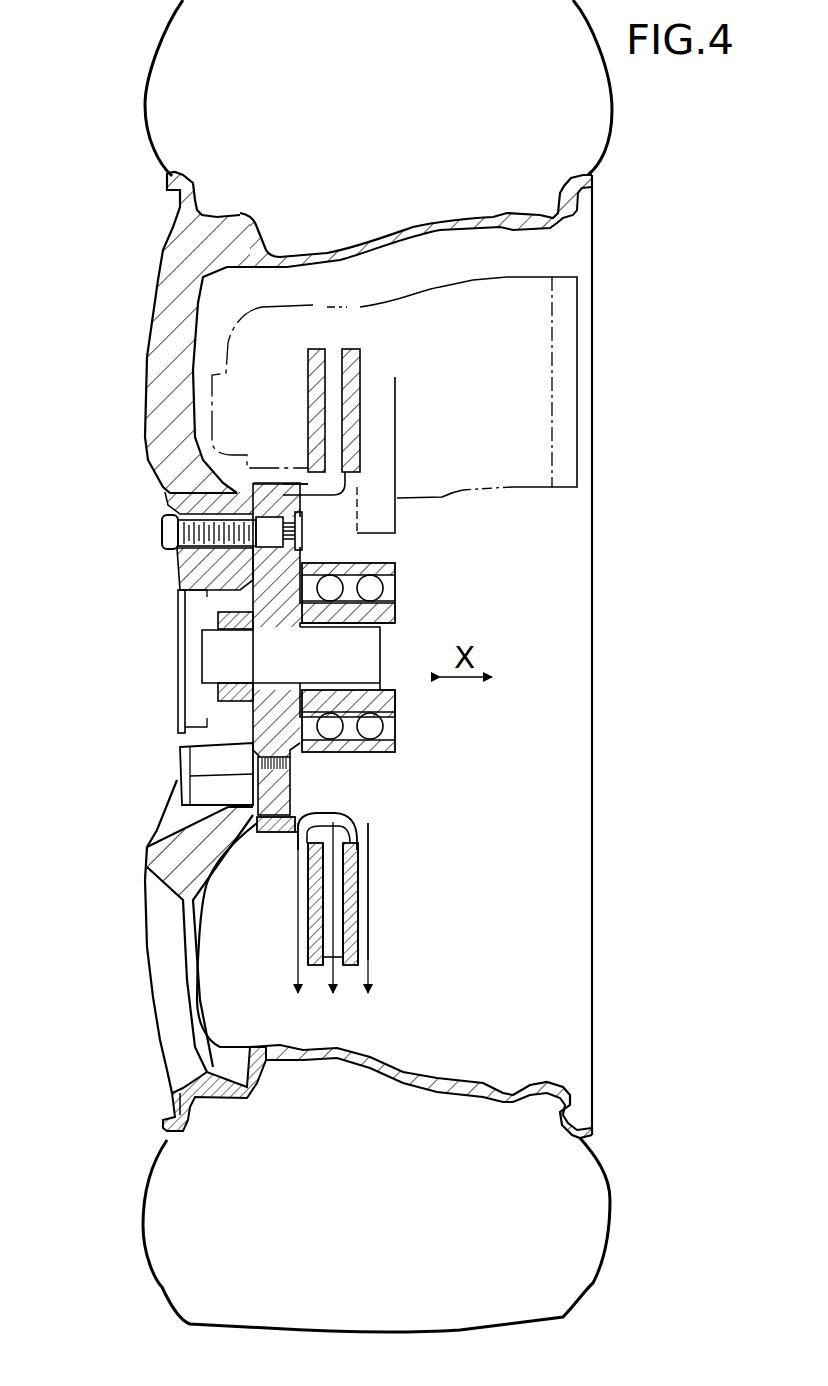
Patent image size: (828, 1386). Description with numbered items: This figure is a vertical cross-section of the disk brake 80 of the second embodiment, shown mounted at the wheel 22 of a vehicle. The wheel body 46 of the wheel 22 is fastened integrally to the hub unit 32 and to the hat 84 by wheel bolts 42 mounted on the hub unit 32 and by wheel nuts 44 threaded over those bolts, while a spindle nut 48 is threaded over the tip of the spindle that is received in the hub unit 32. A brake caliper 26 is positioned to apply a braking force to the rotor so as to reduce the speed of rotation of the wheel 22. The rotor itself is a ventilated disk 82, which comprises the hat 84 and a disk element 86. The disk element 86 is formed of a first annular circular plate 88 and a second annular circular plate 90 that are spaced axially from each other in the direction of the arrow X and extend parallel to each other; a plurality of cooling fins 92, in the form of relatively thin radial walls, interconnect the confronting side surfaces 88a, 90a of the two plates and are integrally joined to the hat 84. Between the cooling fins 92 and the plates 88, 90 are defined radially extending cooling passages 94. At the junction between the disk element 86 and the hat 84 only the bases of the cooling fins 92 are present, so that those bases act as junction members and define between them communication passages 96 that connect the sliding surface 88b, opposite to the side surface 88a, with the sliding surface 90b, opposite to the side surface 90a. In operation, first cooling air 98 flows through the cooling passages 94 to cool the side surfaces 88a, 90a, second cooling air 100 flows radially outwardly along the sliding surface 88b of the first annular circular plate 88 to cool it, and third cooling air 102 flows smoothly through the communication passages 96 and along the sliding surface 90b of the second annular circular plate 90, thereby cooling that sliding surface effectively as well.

The wheel 22 is at (148, 1173).
The brake caliper 26 is at (510, 478).
The hub unit 32 is at (377, 618).
The wheel bolts 42 is at (223, 560).
The wheel nuts 44 is at (162, 532).
The wheel body 46 is at (160, 322).
The spindle nut 48 is at (220, 617).
The disk brake 80 is at (104, 44).
The ventilated disk 82 is at (343, 901).
The hat 84 is at (180, 777).
The disk element 86 is at (367, 381).
The first annular circular plate 88 is at (352, 940).
The side surface 88a is at (345, 858).
The sliding surface 88b is at (359, 874).
The second annular circular plate 90 is at (313, 950).
The side surface 90a is at (327, 913).
The sliding surface 90b is at (310, 883).
The cooling fins 92 is at (355, 478).
The cooling passages 94 is at (343, 962).
The communication passages 96 is at (357, 825).
The first cooling air 98 is at (355, 818).
The second cooling air 100 is at (370, 908).
The third cooling air 102 is at (301, 815).